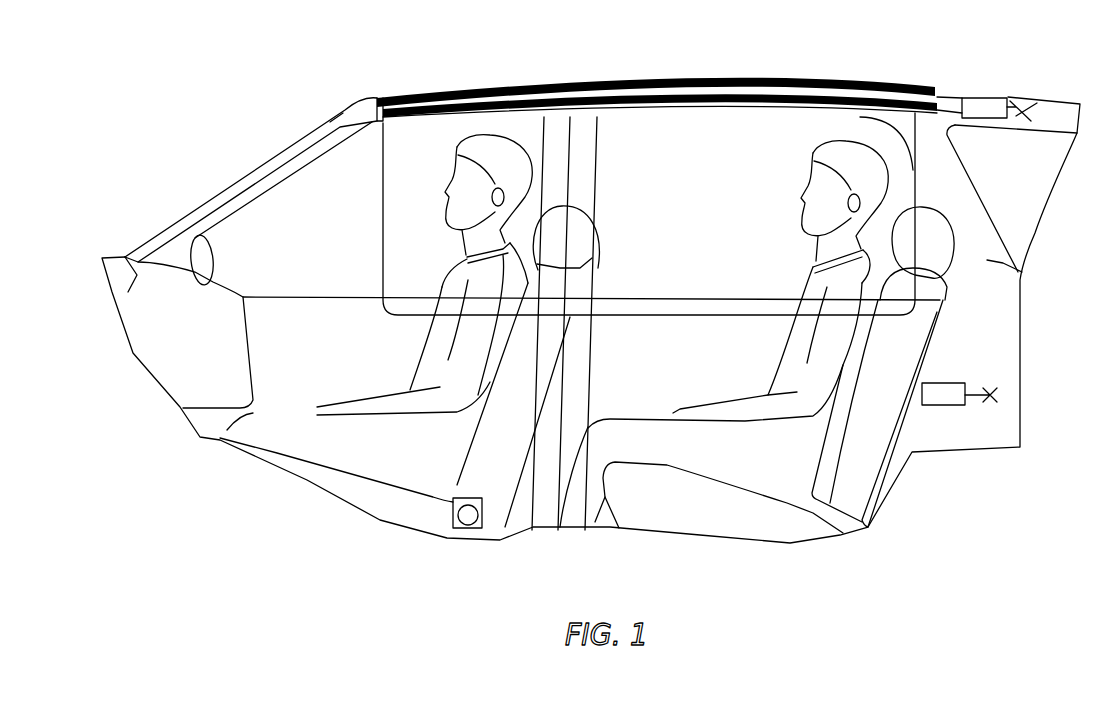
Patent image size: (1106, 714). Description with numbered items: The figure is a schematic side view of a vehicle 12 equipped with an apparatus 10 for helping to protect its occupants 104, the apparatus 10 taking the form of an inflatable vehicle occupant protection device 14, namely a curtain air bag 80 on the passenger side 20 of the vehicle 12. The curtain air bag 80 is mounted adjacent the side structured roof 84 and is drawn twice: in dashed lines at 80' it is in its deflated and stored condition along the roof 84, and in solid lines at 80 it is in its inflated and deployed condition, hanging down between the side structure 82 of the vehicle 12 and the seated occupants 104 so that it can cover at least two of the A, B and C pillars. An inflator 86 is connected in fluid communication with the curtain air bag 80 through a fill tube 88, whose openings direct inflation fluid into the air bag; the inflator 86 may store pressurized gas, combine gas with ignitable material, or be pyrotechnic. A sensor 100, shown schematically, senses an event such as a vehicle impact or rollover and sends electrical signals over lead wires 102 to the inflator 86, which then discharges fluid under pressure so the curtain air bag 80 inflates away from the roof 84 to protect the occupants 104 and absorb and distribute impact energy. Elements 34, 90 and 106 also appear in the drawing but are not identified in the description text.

The apparatus 10 is at (350, 97).
The vehicle 12 is at (284, 139).
The inflatable vehicle occupant protection devices 14 is at (640, 277).
The passenger side 20 is at (684, 168).
The steering wheel 34 is at (198, 236).
The curtain air bag 80 is at (771, 370).
The curtain air bag in deflated and stored condition 80' is at (656, 76).
The side structure 82 is at (1024, 273).
The roof 84 is at (796, 82).
The inflator 86 is at (976, 98).
The fill tube 88 is at (944, 97).
The window frame 90 is at (383, 268).
The sensor 100 is at (942, 383).
The lead wires 102 is at (1017, 100).
The occupants 104 is at (440, 219).
The floor sensor 106 is at (490, 468).